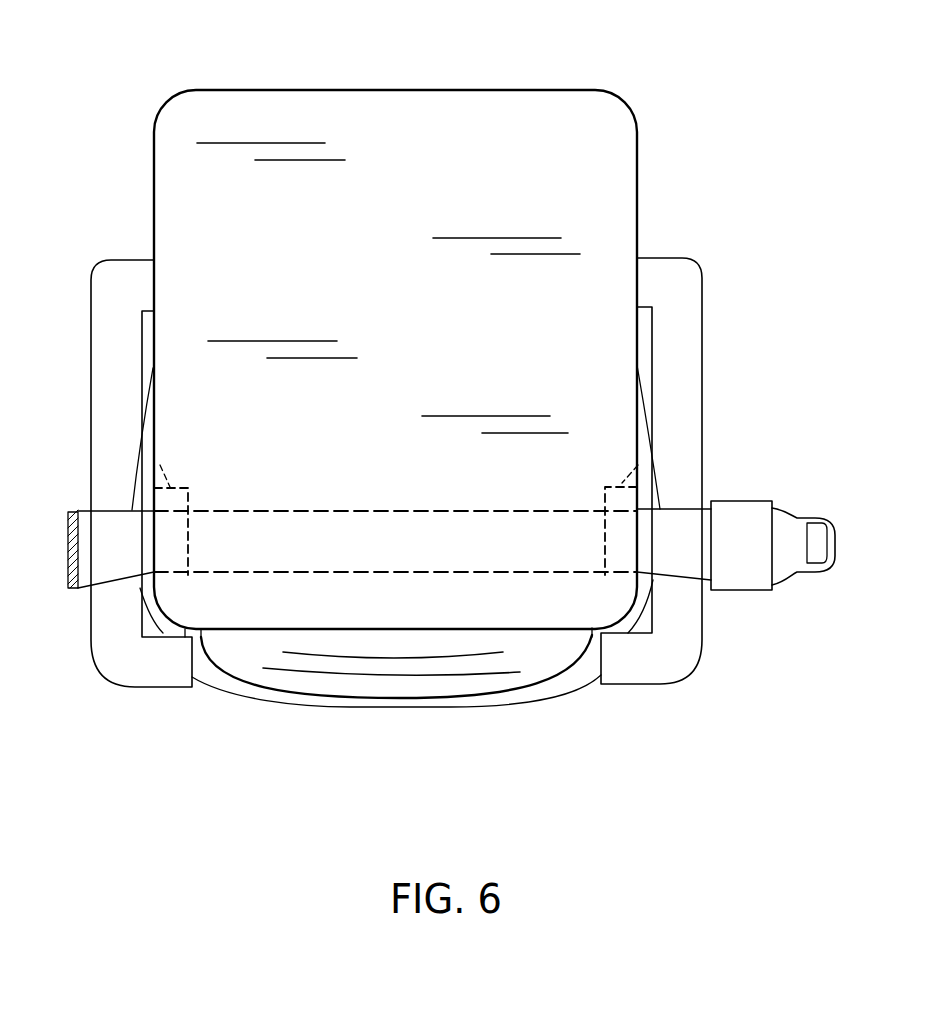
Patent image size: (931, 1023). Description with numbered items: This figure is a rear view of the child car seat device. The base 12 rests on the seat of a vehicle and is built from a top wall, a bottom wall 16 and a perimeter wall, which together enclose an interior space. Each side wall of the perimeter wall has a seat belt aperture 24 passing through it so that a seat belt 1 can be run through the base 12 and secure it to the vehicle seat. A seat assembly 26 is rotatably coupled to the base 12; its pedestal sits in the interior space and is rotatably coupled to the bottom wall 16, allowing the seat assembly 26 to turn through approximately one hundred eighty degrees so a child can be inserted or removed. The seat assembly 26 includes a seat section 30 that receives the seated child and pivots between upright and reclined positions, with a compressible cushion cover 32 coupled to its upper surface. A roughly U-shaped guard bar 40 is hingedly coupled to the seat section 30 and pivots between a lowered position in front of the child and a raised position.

The base 12 is at (623, 101).
The bottom wall 16 is at (607, 187).
The guard bar 40 is at (687, 323).
The cushion cover 32 is at (652, 490).
The seat belt aperture 24 is at (153, 453).
The seat belt 1 is at (742, 590).
The seat section 30 is at (375, 677).
The seat assembly 26 is at (567, 700).